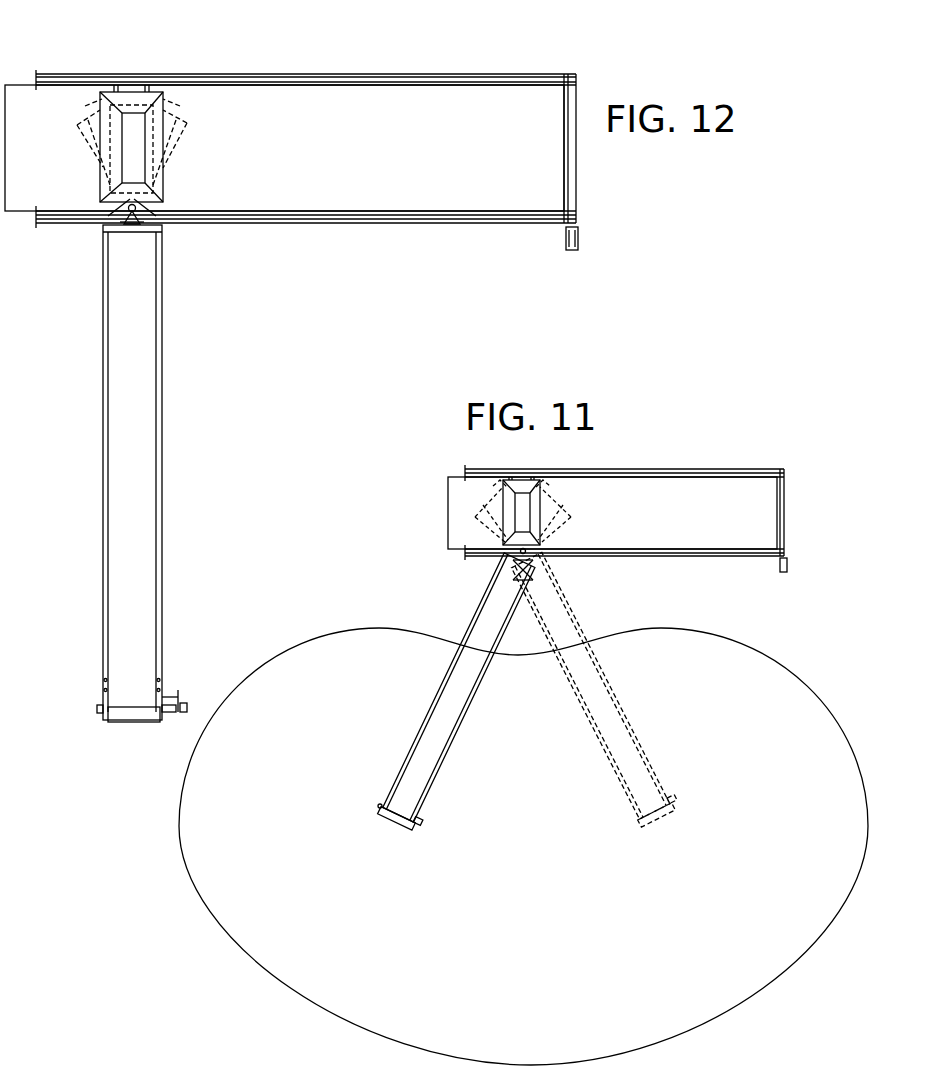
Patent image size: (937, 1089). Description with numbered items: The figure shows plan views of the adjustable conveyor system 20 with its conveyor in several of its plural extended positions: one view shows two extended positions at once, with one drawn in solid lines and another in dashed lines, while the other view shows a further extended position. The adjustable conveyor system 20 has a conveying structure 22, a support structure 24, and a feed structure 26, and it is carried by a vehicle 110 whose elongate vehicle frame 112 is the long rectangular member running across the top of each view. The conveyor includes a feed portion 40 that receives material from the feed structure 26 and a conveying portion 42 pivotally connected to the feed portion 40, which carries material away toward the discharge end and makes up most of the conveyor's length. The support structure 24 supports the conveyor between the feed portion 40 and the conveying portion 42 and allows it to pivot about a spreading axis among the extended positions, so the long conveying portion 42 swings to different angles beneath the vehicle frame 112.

In FIG. 12, the adjustable conveyor system 20 is at (78, 237).
In FIG. 11, the adjustable conveyor system 20 is at (478, 562).
In FIG. 12, the conveying structure 22 is at (188, 416).
In FIG. 11, the conveying structure 22 is at (472, 767).
In FIG. 12, the support structure 24 is at (152, 214).
In FIG. 11, the support structure 24 is at (536, 551).
In FIG. 12, the feed structure 26 is at (188, 138).
In FIG. 11, the feed structure 26 is at (582, 523).
In FIG. 12, the feed portion 40 is at (448, 63).
In FIG. 12, the conveying portion 42 is at (167, 355).
In FIG. 11, the conveying portion 42 is at (477, 719).
In FIG. 11, the vehicle 110 is at (708, 460).
In FIG. 12, the vehicle frame 112 is at (575, 173).